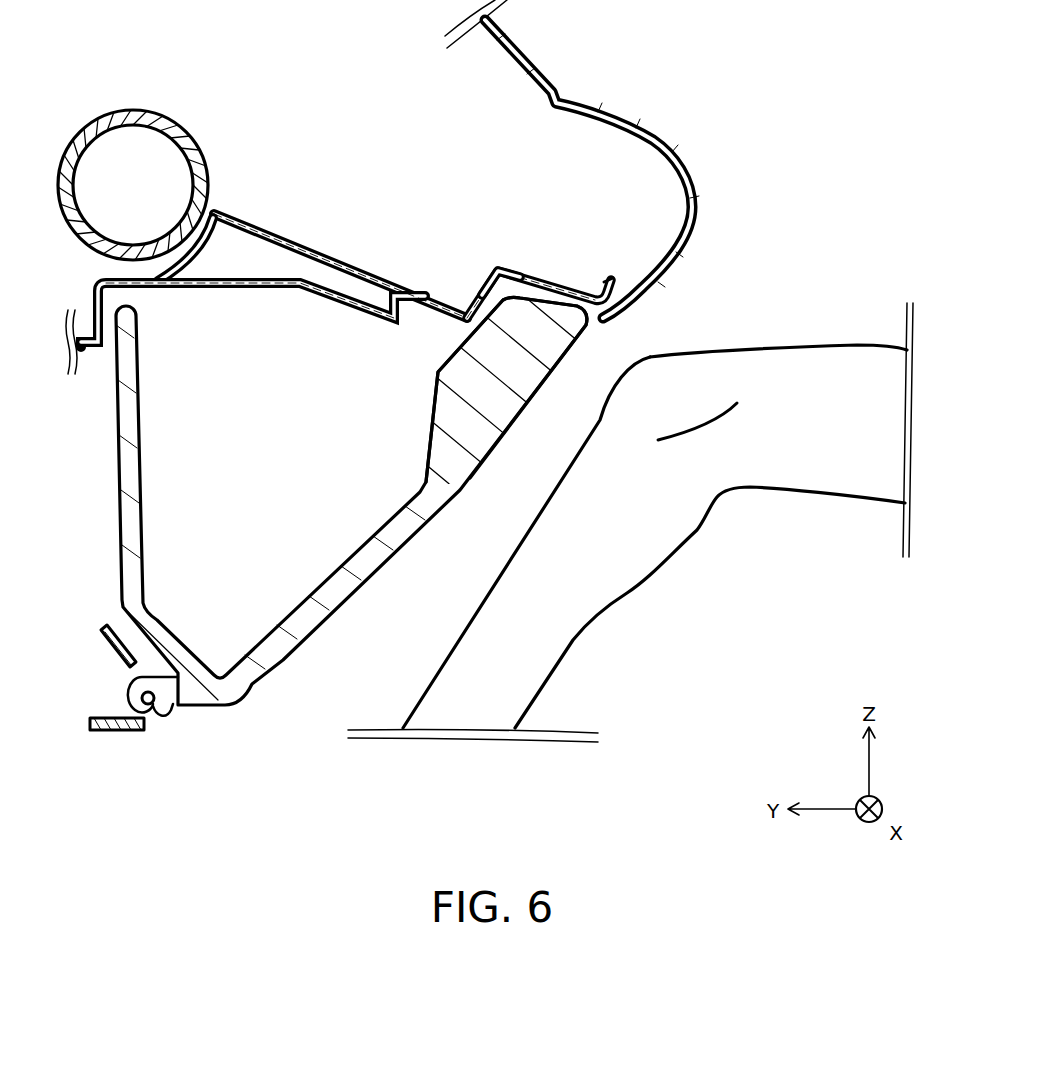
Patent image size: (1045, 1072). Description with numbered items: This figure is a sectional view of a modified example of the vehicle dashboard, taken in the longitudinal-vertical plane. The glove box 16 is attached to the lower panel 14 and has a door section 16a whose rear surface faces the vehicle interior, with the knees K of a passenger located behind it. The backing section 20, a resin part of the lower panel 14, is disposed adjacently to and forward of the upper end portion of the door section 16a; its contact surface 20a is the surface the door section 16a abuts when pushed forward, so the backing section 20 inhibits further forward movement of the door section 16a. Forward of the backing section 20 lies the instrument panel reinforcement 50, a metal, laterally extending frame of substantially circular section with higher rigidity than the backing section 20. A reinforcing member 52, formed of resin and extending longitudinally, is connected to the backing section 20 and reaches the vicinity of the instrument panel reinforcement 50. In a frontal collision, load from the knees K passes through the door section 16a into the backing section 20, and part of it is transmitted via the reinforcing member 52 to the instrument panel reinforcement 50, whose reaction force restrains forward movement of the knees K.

The lower panel 14 is at (728, 219).
The glove box 16 is at (361, 631).
The door section 16a is at (480, 465).
The backing section 20 is at (572, 292).
The contact surface 20a is at (502, 285).
The instrument panel reinforcement 50 is at (147, 112).
The reinforcing member 52 is at (331, 243).
The knees K is at (693, 332).